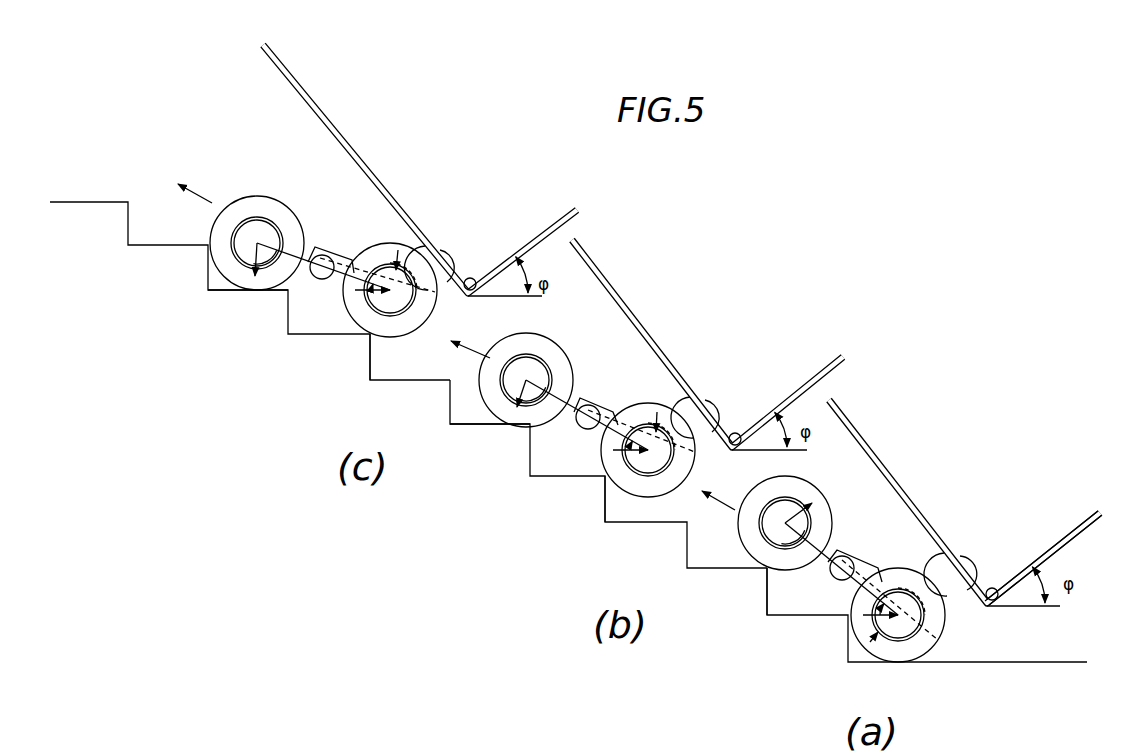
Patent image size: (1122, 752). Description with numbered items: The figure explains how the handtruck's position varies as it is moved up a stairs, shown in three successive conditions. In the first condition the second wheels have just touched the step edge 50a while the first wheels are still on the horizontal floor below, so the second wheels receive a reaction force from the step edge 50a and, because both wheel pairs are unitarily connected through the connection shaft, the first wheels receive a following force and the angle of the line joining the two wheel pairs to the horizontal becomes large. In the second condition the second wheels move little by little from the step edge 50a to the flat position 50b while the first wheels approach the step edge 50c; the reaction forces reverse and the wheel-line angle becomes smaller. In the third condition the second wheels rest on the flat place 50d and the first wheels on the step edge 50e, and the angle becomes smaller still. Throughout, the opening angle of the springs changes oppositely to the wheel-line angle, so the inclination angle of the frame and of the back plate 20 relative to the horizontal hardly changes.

The back plate 20 is at (1068, 540).
The step edge 50a is at (766, 570).
The flat position 50b is at (529, 426).
The step edge 50c is at (604, 478).
The flat place 50d is at (260, 291).
The step edge 50e is at (369, 336).